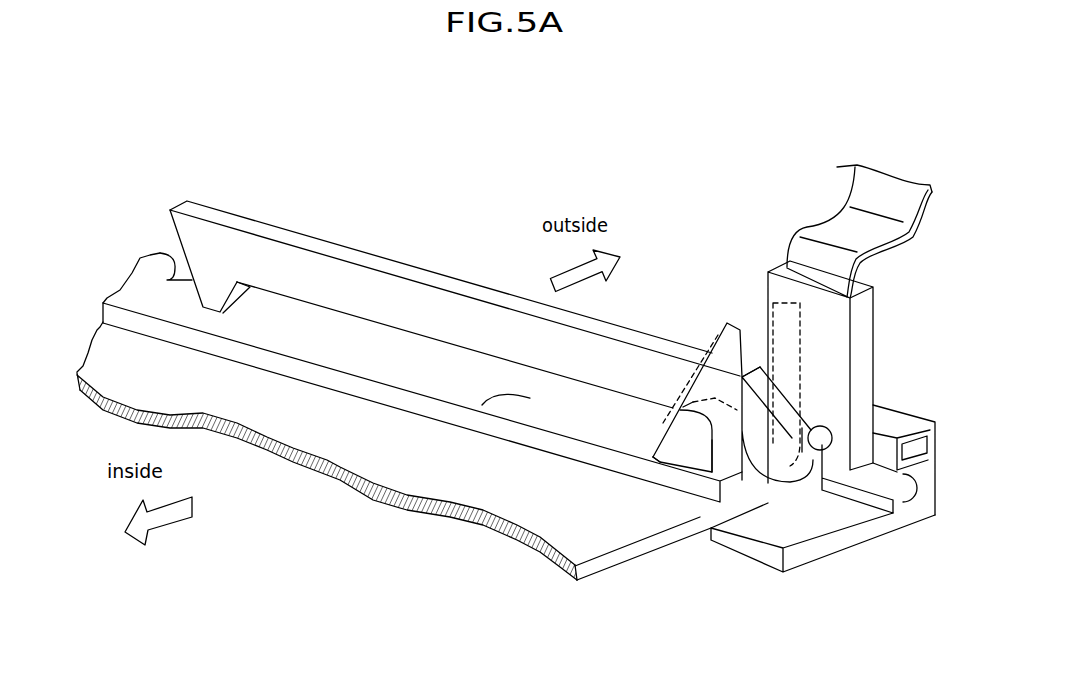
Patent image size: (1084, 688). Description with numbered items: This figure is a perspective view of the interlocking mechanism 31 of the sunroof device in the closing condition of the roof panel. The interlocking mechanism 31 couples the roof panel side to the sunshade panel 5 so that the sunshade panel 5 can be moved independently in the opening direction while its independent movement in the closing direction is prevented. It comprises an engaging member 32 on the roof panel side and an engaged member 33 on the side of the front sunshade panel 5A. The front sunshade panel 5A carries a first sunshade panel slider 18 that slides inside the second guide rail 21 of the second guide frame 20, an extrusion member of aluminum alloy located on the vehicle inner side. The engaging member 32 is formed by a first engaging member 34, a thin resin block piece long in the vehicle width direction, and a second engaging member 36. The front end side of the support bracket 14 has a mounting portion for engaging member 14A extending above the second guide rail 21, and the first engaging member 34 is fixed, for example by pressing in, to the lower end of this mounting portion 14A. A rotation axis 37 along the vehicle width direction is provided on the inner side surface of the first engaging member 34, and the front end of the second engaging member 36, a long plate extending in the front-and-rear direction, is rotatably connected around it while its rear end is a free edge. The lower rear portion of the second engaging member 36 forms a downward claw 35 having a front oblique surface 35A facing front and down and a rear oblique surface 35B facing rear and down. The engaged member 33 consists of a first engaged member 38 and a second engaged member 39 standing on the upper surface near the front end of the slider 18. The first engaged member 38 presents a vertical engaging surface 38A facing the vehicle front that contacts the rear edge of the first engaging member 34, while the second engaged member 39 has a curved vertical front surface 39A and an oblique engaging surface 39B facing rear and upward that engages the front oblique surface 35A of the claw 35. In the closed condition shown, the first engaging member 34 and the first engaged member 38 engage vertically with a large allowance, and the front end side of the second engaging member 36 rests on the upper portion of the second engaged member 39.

The sunshade panel 5 is at (390, 419).
The front sunshade panel 5A is at (340, 438).
The support bracket 14 is at (852, 199).
The mounting portion for engaging member 14A is at (837, 227).
The first sunshade panel slider 18 is at (482, 405).
The second guide frame 20 is at (898, 515).
The second guide rail 21 is at (805, 535).
The interlocking mechanism 31 is at (411, 301).
The engaging member 32 is at (455, 304).
The engaged member 33 is at (745, 433).
The first engaging member 34 is at (783, 265).
The claw 35 is at (251, 253).
The front oblique surface 35A is at (247, 290).
The rear oblique surface 35B is at (160, 253).
The second engaging member 36 is at (415, 307).
The rotation axis 37 is at (832, 432).
The first engaged member 38 is at (721, 370).
The engaging surface 38A is at (757, 342).
The second engaged member 39 is at (659, 503).
The front surface 39A is at (743, 452).
The oblique engaging surface 39B is at (655, 443).